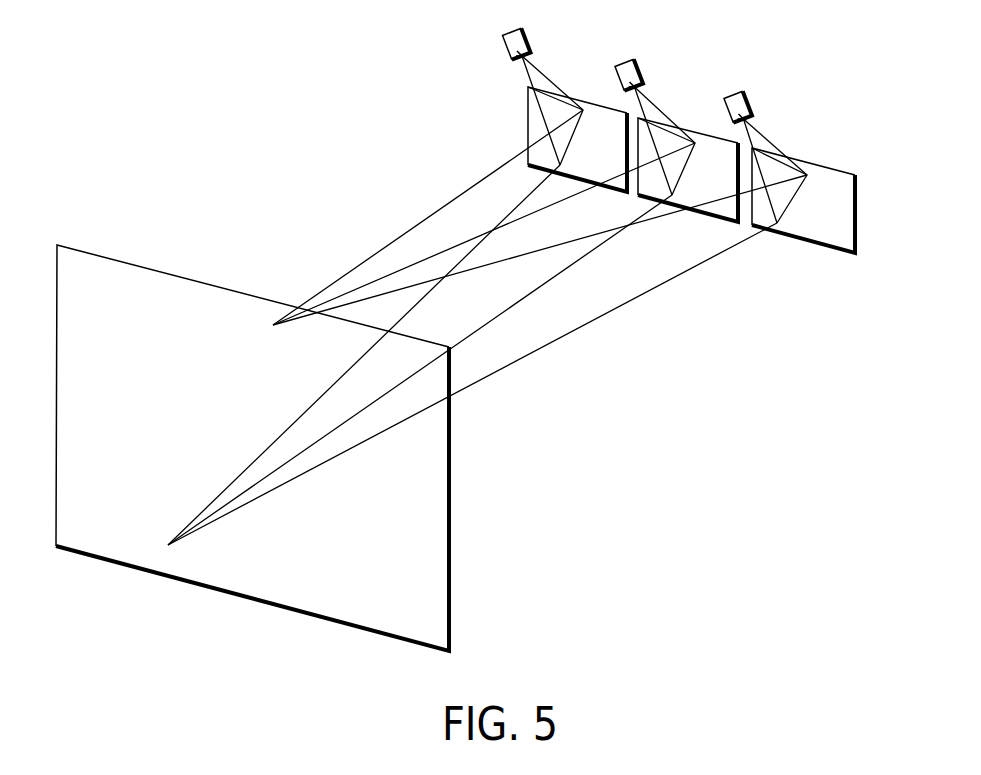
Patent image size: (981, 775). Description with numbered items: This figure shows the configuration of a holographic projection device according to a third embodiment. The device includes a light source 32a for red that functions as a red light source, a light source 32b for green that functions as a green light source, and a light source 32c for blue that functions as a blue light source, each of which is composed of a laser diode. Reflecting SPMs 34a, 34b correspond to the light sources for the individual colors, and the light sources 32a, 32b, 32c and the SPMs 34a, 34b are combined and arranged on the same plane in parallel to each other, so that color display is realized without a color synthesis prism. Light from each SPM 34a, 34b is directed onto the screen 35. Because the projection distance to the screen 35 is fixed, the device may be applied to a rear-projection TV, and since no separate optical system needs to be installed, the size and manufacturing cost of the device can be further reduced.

The light source for red 32a is at (540, 82).
The light source for green 32b is at (654, 112).
The light source for blue 32c is at (763, 142).
The reflecting SPM 34a is at (527, 107).
The reflecting SPM 34b is at (856, 212).
The screen 35 is at (453, 508).